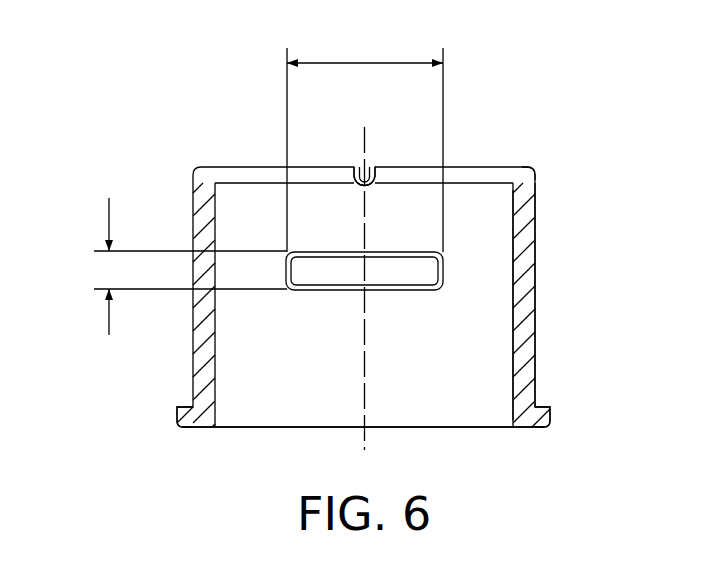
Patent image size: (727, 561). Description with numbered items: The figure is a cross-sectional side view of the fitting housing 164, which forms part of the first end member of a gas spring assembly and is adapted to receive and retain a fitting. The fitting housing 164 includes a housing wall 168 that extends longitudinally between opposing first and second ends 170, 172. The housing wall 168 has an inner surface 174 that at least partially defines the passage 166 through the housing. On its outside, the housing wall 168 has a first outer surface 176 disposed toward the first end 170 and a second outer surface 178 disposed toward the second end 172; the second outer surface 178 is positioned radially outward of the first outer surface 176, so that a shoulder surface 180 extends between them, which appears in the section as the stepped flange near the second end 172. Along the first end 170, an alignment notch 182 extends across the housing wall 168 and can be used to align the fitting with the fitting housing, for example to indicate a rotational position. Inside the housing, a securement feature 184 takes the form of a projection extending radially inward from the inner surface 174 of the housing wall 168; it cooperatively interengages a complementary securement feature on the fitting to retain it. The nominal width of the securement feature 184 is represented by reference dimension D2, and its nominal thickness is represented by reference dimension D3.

The fitting housing 164 is at (575, 247).
The passage 166 is at (479, 205).
The housing wall 168 is at (523, 352).
The first end 170 is at (544, 175).
The second end 172 is at (556, 430).
The inner surface 174 is at (512, 333).
The first outer surface 176 is at (536, 307).
The second outer surface 178 is at (551, 412).
The shoulder surface 180 is at (185, 405).
The alignment notch 182 is at (361, 160).
The securement feature 184 is at (325, 275).
The reference dimension D2 is at (353, 62).
The reference dimension D3 is at (108, 212).